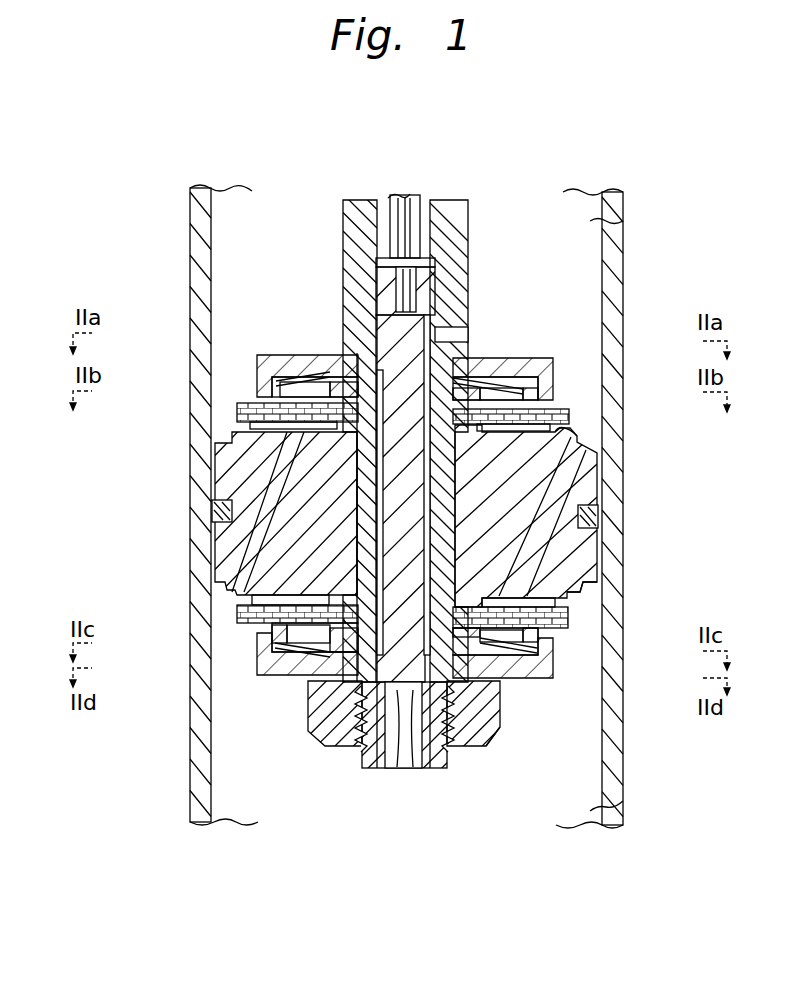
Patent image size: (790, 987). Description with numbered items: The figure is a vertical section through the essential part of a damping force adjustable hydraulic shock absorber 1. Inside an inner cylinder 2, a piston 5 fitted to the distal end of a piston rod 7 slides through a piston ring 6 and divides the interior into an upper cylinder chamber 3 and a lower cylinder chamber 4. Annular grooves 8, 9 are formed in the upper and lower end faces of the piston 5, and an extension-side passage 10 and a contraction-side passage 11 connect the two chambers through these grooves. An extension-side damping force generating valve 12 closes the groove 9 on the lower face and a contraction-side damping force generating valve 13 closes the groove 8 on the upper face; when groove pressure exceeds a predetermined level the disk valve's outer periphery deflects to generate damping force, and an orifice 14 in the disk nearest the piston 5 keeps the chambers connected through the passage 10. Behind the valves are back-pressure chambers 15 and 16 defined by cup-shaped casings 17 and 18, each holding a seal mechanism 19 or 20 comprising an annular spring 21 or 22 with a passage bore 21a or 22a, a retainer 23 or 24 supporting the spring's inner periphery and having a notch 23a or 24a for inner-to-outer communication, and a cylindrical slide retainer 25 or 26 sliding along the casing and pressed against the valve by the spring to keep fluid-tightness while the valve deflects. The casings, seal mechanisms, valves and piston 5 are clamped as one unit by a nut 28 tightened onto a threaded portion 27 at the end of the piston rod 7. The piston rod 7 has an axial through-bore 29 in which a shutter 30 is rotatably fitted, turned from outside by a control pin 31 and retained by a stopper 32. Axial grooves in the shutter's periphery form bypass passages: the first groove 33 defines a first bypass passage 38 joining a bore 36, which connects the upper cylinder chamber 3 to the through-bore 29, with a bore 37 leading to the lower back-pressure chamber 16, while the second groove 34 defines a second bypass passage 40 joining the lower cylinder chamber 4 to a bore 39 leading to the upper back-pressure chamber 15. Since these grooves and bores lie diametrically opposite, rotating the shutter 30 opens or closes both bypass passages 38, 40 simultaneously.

The damping force adjustable hydraulic shock absorber 1 is at (660, 308).
The inner cylinder 2 is at (602, 256).
The upper cylinder chamber 3 is at (610, 219).
The lower cylinder chamber 4 is at (608, 806).
The piston 5 is at (545, 477).
The piston ring 6 is at (585, 515).
The piston rod 7 is at (463, 223).
The upper annular groove 8 is at (557, 433).
The lower annular groove 9 is at (577, 598).
The extension-side passage 10 is at (543, 556).
The contraction-side passage 11 is at (233, 562).
The extension-side damping force generating valve 12 is at (570, 620).
The contraction-side damping force generating valve 13 is at (570, 417).
The orifice 14 is at (237, 605).
The back-pressure chamber 15 is at (272, 397).
The back-pressure chamber 16 is at (260, 660).
The casing 17 is at (268, 356).
The casing 18 is at (262, 678).
The seal mechanism 19 is at (292, 385).
The seal mechanism 20 is at (290, 660).
The annular spring 21 is at (311, 373).
The passage bore 21a is at (293, 372).
The annular spring 22 is at (323, 680).
The passage bore 22a is at (302, 660).
The retainer 23 is at (473, 385).
The notch 23a is at (500, 375).
The retainer 24 is at (500, 720).
The notch 24a is at (507, 665).
The cylindrical slide retainer 25 is at (240, 403).
The cylindrical slide retainer 26 is at (272, 628).
The threaded portion 27 is at (470, 748).
The nut 28 is at (493, 745).
The through-bore 29 is at (344, 245).
The shutter 30 is at (400, 690).
The control pin 31 is at (410, 196).
The stopper 32 is at (427, 765).
The first groove 33 is at (420, 700).
The second groove 34 is at (340, 690).
The bore 36 is at (445, 330).
The bore 37 is at (470, 687).
The first bypass passage 38 is at (553, 402).
The bore 39 is at (380, 292).
The second bypass passage 40 is at (376, 478).